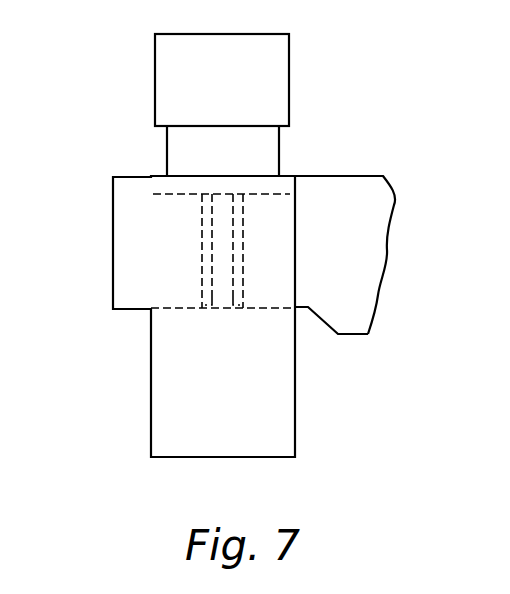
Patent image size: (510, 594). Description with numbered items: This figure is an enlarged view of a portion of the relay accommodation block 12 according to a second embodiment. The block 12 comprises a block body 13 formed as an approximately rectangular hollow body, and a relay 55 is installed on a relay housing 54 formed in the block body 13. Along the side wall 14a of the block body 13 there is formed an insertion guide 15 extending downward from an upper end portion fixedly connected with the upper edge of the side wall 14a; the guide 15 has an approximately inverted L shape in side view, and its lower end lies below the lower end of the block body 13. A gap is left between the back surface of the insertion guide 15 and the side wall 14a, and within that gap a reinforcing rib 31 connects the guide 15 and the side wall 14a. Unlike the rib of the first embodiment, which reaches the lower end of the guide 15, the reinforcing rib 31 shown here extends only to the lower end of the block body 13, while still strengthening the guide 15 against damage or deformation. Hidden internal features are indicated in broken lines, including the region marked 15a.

The relay accommodation block 12 is at (395, 70).
The block body 13 is at (338, 175).
The side wall 14a is at (362, 292).
The insertion guide 15 is at (283, 417).
The internal passage 15a is at (162, 194).
The reinforcing rib 31 is at (243, 310).
The relay housing 54 is at (260, 138).
The relay 55 is at (272, 53).